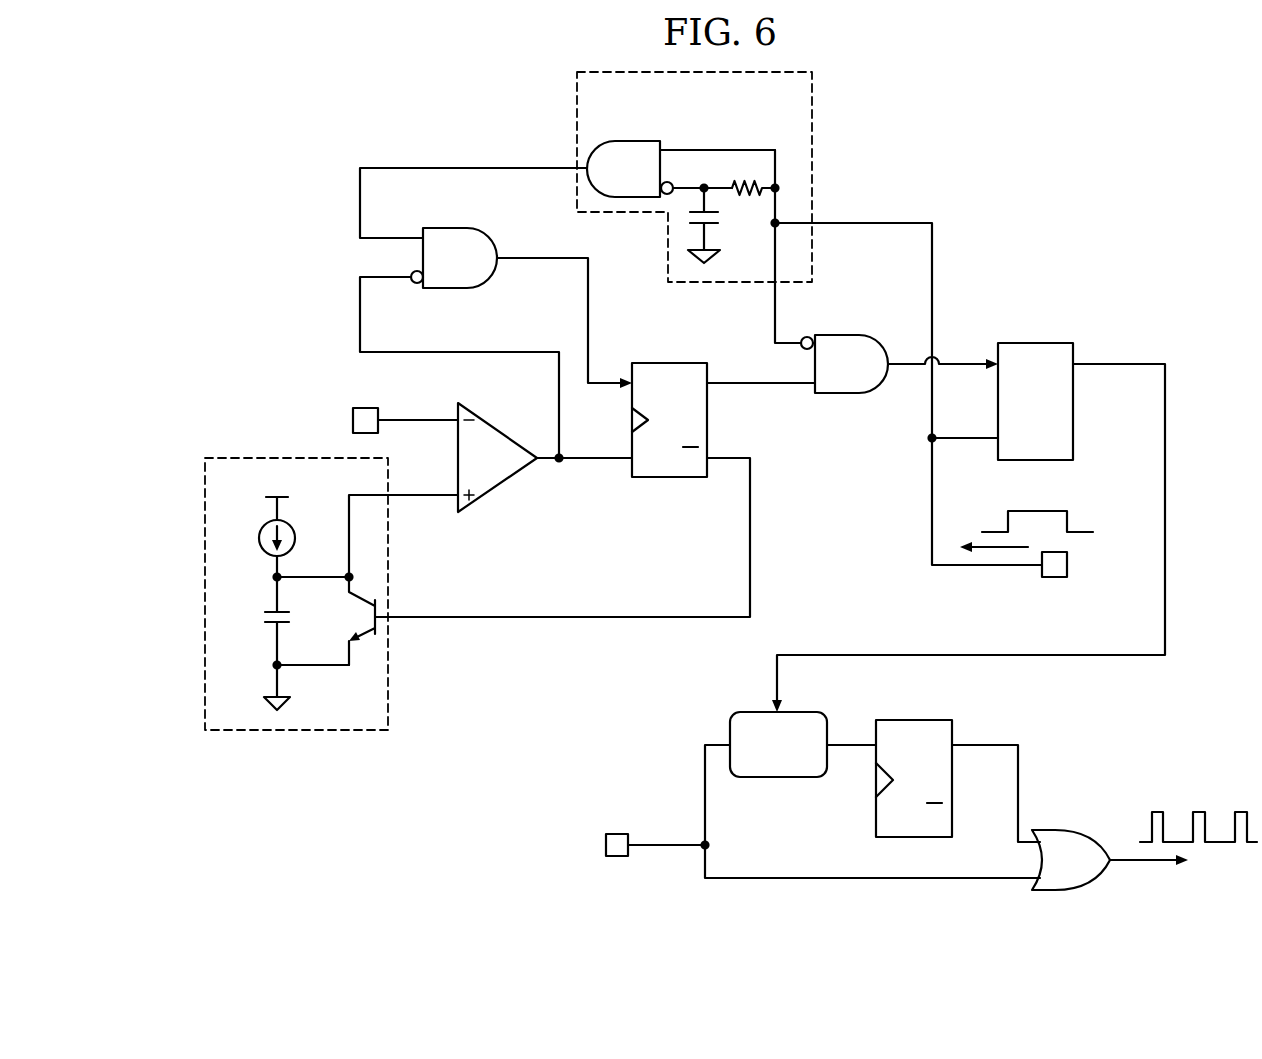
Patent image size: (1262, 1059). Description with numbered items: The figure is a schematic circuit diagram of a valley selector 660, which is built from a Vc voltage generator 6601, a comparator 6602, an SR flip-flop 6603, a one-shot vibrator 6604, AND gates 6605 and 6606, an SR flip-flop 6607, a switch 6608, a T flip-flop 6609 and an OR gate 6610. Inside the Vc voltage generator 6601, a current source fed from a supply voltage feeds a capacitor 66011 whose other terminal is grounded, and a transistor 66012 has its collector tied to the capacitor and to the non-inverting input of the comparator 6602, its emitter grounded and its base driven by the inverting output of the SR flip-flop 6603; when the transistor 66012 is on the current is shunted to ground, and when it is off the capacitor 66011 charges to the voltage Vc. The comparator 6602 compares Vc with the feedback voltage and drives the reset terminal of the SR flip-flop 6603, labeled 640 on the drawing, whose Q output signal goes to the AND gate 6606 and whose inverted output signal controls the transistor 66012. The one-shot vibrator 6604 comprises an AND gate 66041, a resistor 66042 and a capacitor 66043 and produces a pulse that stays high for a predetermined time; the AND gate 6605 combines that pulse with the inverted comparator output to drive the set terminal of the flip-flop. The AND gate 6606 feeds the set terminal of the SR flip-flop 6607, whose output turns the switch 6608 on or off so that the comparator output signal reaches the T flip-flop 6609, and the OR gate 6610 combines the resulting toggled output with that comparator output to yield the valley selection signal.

The valley selector 660 is at (1085, 198).
The Vc voltage generator 6601 is at (250, 458).
The capacitor (C5) 66011 is at (227, 618).
The transistor (Q1) 66012 is at (377, 621).
The comparator 6602 is at (493, 490).
The SR flip-flop 6603 is at (688, 363).
The RS flip-flop 640 is at (684, 478).
The one-shot vibrator 6604 is at (812, 135).
The AND gate 66041 is at (657, 122).
The resistor (R5) 66042 is at (730, 170).
The capacitor (C6) 66043 is at (690, 226).
The AND gate 6605 is at (455, 228).
The AND gate 6606 is at (845, 335).
The SR flip-flop 6607 is at (1052, 343).
The switch 6608 is at (730, 716).
The T flip-flop 6609 is at (876, 816).
The OR gate 6610 is at (1080, 885).